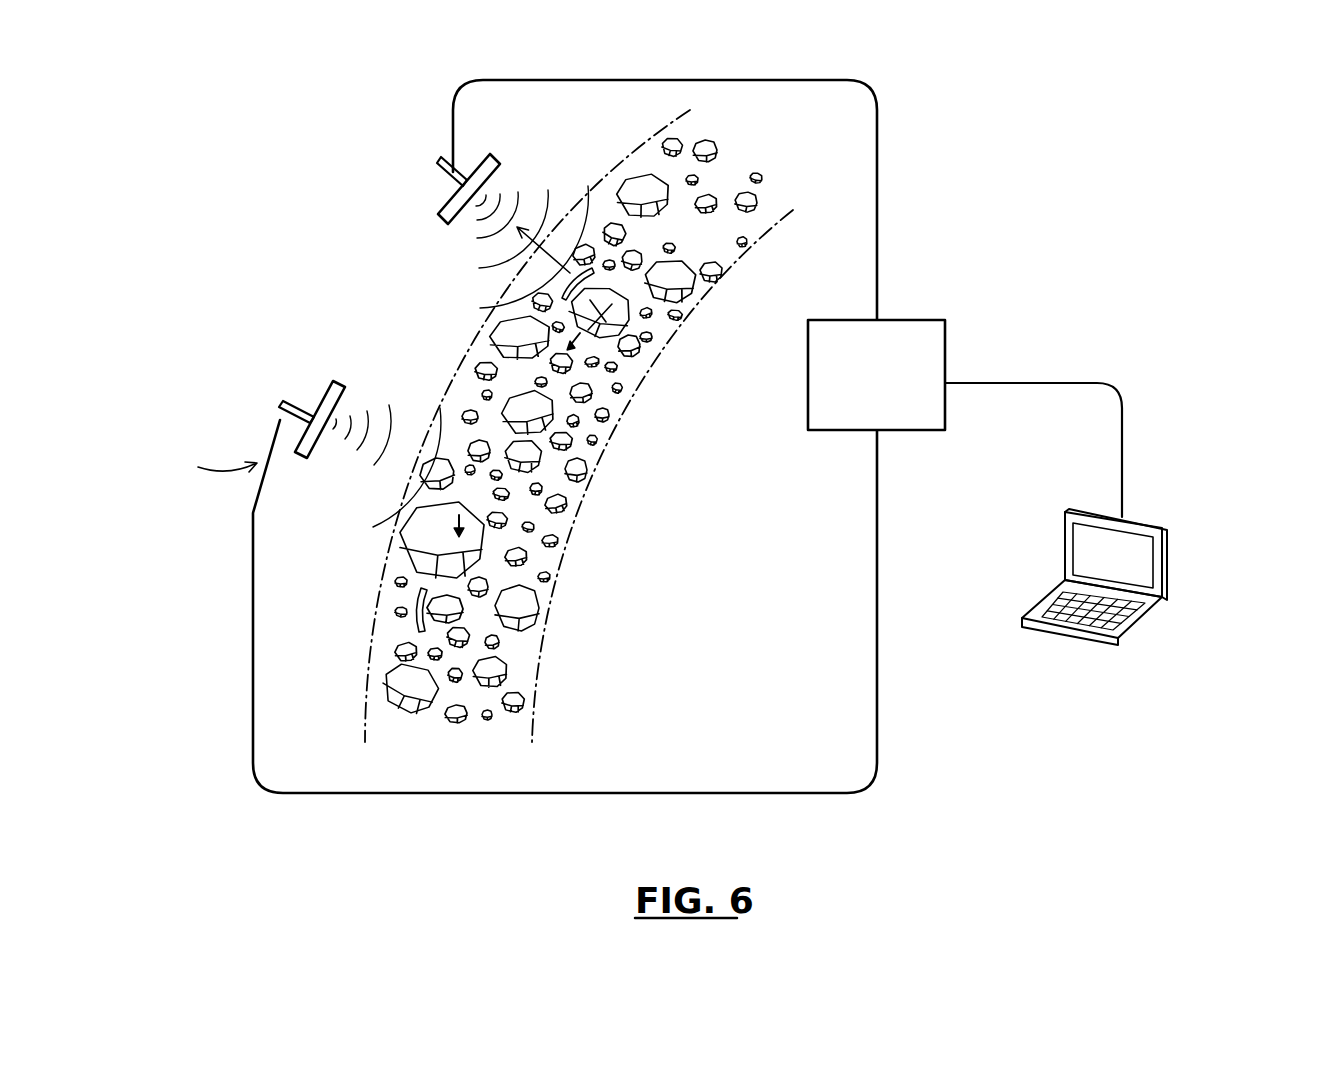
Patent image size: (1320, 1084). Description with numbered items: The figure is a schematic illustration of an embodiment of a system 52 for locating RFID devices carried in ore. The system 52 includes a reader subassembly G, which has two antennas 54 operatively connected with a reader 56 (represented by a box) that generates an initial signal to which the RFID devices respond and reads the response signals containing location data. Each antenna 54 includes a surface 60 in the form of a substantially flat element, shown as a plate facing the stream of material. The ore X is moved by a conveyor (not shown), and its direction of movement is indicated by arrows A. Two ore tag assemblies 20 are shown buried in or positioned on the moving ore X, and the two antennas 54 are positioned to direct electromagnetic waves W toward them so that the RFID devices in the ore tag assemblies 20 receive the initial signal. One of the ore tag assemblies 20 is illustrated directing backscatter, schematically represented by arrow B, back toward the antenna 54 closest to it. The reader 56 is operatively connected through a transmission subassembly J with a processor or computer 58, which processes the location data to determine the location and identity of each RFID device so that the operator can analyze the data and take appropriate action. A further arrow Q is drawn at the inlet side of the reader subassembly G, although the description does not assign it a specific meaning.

The reader subassembly G is at (920, 141).
The flow direction of material Q is at (207, 460).
The ore tag assembly 20 is at (628, 258).
The system 52 is at (1024, 418).
The antenna 54 is at (421, 323).
The reader 56 is at (903, 327).
The processor 58 is at (1168, 557).
The surface 60 is at (498, 170).
The arrows A is at (620, 315).
The arrow B is at (549, 221).
The electromagnetic waves W is at (495, 264).
The ore X is at (517, 600).
The transmission subassembly J is at (1139, 397).